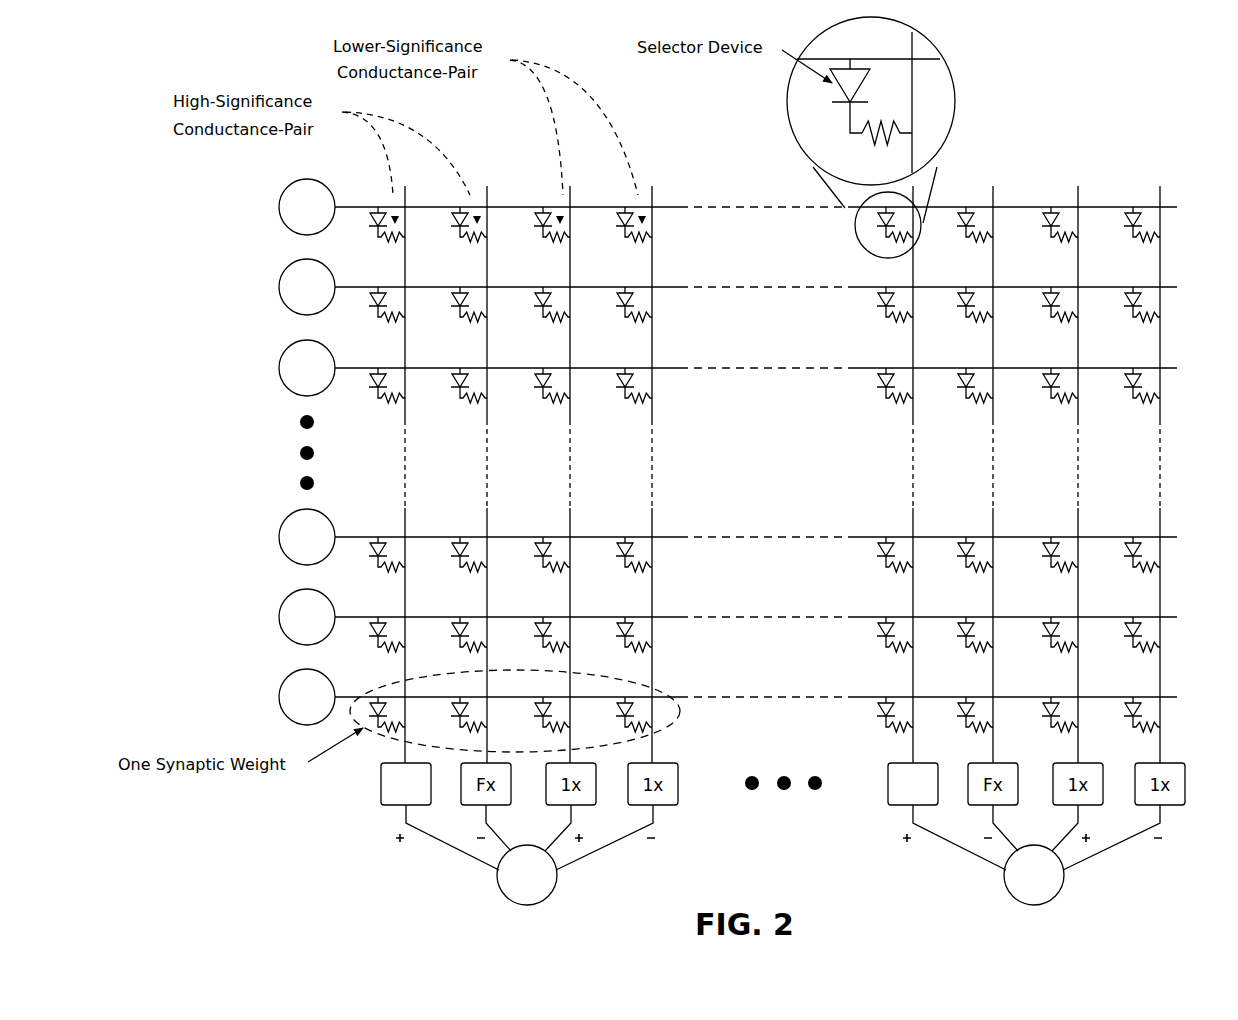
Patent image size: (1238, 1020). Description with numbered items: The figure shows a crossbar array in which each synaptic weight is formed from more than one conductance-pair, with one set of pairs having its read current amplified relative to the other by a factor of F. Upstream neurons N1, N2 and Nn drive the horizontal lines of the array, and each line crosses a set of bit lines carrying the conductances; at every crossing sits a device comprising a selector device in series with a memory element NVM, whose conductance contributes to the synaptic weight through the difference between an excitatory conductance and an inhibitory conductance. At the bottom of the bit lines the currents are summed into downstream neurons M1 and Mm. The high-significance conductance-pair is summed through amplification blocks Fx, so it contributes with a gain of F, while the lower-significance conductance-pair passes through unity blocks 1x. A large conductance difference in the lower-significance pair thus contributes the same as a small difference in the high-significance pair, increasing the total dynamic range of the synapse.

The input neuron N1 is at (307, 207).
The input neuron N2 is at (307, 287).
The input neuron Nn is at (307, 697).
The output neuron M1 is at (527, 875).
The output neuron Mm is at (1034, 875).
The high-significance scaling block Fx is at (406, 784).
The scaling block 1x is at (913, 784).
The non-volatile memory element NVM is at (908, 118).